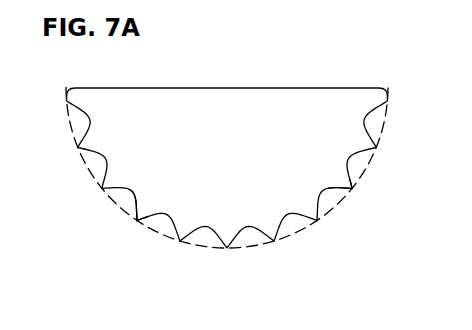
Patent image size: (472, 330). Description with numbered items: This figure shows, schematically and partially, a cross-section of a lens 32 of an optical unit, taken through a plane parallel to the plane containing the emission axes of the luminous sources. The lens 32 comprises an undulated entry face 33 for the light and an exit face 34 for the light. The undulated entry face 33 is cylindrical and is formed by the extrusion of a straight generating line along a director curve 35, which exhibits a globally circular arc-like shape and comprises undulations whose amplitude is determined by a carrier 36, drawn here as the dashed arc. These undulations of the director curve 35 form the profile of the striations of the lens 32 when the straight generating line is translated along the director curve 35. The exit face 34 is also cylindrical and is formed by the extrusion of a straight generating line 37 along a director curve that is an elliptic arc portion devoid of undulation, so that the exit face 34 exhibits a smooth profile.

The lens 32 is at (261, 253).
The undulated entry face 33 is at (340, 204).
The exit face 34 is at (253, 88).
The director curve 35 is at (135, 219).
The carrier 36 is at (368, 163).
The straight generating line 37 is at (152, 88).